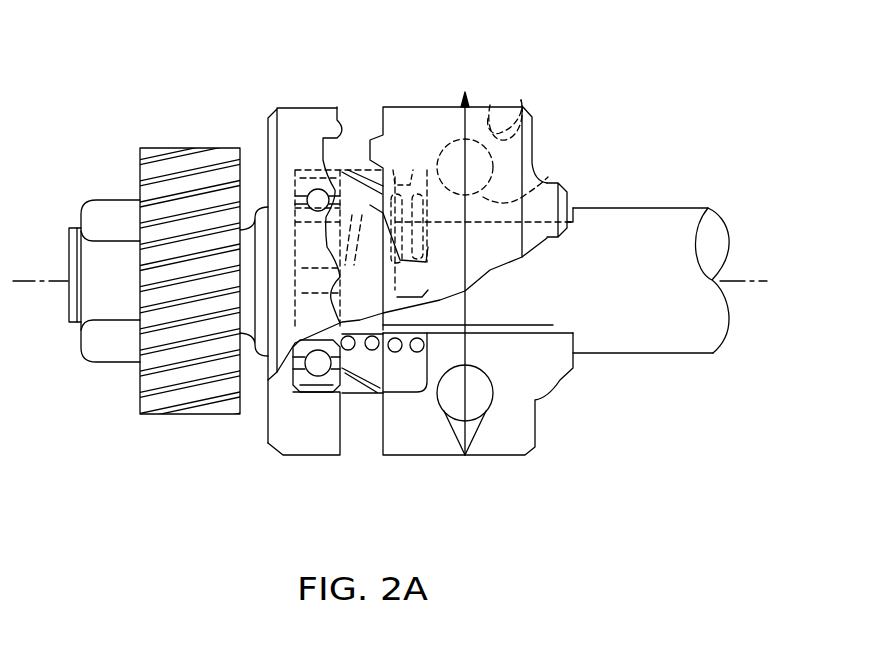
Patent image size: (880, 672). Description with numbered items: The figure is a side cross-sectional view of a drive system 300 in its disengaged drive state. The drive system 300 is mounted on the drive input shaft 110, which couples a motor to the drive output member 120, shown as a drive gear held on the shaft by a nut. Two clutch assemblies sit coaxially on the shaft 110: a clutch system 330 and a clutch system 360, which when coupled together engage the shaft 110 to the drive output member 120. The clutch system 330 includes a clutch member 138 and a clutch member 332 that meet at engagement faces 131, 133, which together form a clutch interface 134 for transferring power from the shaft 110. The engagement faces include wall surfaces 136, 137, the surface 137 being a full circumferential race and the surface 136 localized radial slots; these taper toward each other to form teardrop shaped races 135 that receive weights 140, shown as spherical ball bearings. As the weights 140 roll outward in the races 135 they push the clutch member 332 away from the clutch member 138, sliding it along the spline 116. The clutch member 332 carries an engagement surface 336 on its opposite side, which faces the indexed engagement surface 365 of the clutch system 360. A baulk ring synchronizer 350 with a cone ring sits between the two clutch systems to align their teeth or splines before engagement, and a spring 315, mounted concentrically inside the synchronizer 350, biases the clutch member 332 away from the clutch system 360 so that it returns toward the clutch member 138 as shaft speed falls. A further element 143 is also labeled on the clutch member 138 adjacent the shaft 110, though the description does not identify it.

The drive system 300 is at (652, 110).
The drive input shaft 110 is at (695, 354).
The spline 116 is at (556, 330).
The drive output member 120 is at (153, 416).
The engagement face 131 is at (479, 443).
The engagement face 133 is at (452, 443).
The clutch interface 134 is at (465, 92).
The races 135 is at (490, 105).
The wall surface 136 is at (508, 112).
The wall surface 137 is at (440, 150).
The clutch member 138 is at (535, 406).
The weights 140 is at (474, 373).
The collar 143 is at (547, 182).
The spring 315 is at (413, 170).
The clutch system 330 is at (532, 458).
The clutch member 332 is at (386, 457).
The engagement surface 336 is at (370, 140).
The baulk ring synchronizer 350 is at (360, 394).
The clutch system 360 is at (279, 459).
The engagement surface 365 is at (340, 135).